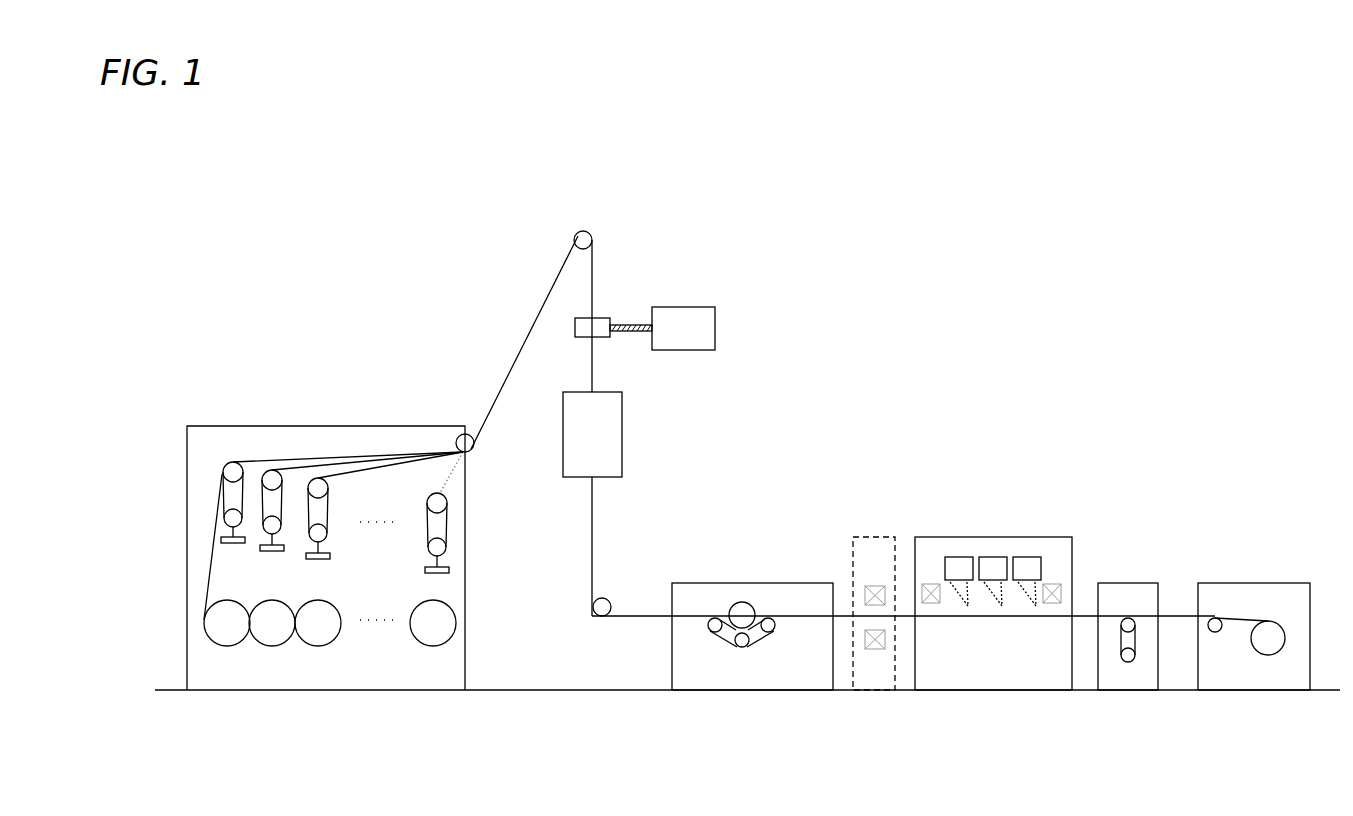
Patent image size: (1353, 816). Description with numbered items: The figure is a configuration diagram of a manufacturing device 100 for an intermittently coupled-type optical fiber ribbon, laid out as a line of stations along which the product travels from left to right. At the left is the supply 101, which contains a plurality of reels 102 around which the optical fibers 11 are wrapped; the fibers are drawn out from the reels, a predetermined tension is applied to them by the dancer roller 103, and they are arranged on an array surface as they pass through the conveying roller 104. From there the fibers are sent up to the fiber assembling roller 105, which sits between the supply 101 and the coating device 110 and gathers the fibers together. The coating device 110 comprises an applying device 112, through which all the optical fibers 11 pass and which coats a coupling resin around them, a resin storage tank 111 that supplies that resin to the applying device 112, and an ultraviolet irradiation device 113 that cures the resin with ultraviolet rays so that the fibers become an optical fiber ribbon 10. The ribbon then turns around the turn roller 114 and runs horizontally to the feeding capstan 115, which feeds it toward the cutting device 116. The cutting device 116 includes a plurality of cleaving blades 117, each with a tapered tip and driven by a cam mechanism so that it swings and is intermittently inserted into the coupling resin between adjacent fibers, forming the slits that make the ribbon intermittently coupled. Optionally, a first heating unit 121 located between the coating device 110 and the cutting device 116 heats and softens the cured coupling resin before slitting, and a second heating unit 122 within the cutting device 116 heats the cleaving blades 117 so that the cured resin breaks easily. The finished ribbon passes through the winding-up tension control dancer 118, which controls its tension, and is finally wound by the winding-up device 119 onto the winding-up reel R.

The manufacturing device 100 is at (1007, 293).
The supply 101 is at (335, 426).
The reels 102 is at (218, 630).
The dancer roller 103 is at (447, 500).
The conveying roller 104 is at (460, 434).
The fiber assembling roller 105 is at (584, 231).
The optical fiber ribbon 10 is at (592, 508).
The optical fibers 11 is at (215, 548).
The coating device 110 is at (635, 383).
The resin storage tank 111 is at (715, 322).
The applying device 112 is at (600, 318).
The ultraviolet irradiation device 113 is at (622, 418).
The turn roller 114 is at (607, 600).
The feeding capstan 115 is at (762, 583).
The cutting device 116 is at (993, 573).
The cleaving blades 117 is at (993, 601).
The winding-up tension control dancer 118 is at (1143, 583).
The winding-up device 119 is at (1254, 629).
The first heating unit 121 is at (872, 537).
The second heating unit 122 is at (940, 607).
The winding-up reel R is at (1260, 656).